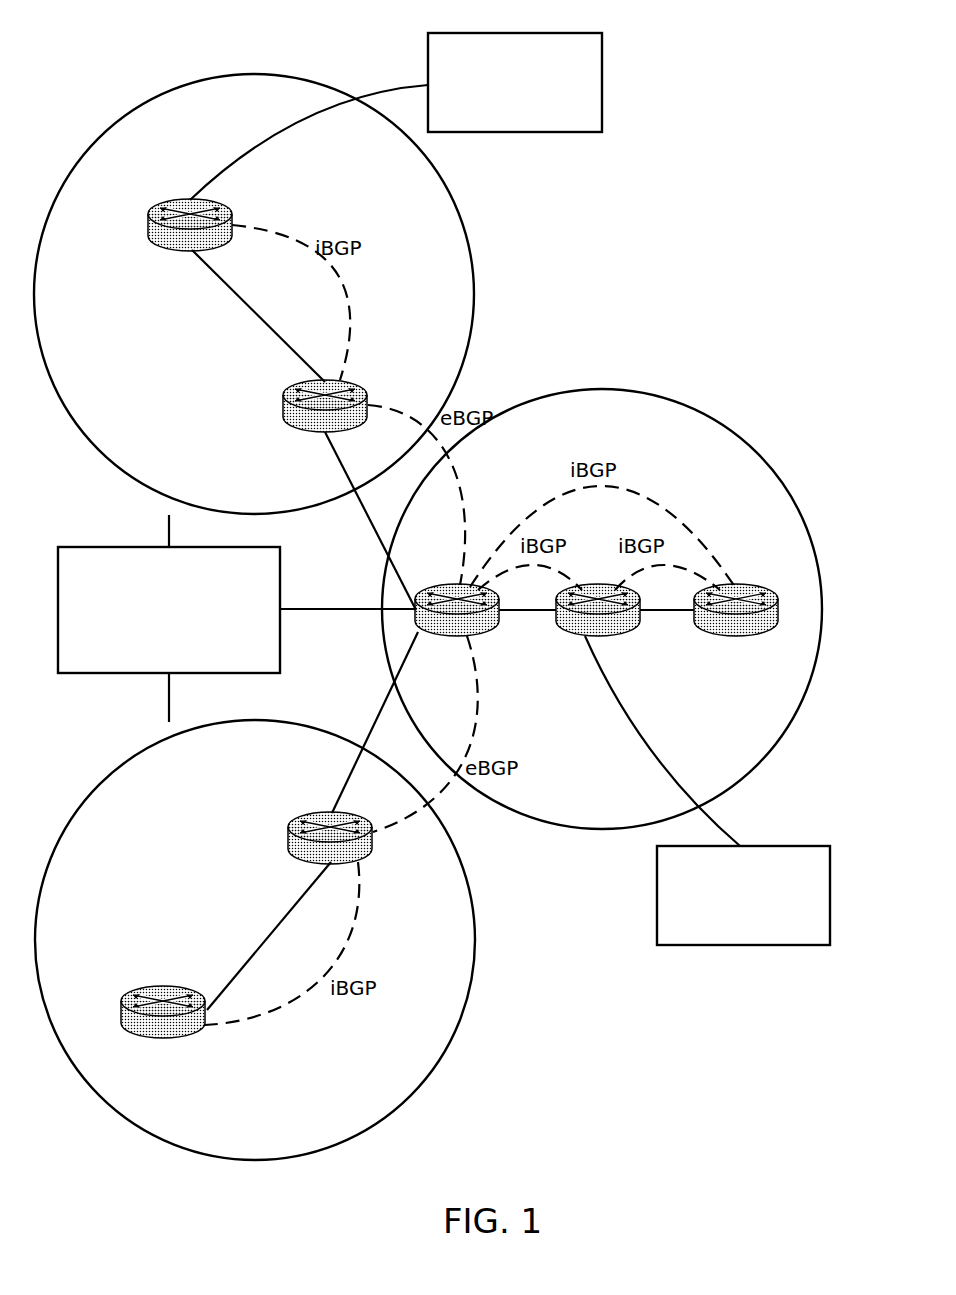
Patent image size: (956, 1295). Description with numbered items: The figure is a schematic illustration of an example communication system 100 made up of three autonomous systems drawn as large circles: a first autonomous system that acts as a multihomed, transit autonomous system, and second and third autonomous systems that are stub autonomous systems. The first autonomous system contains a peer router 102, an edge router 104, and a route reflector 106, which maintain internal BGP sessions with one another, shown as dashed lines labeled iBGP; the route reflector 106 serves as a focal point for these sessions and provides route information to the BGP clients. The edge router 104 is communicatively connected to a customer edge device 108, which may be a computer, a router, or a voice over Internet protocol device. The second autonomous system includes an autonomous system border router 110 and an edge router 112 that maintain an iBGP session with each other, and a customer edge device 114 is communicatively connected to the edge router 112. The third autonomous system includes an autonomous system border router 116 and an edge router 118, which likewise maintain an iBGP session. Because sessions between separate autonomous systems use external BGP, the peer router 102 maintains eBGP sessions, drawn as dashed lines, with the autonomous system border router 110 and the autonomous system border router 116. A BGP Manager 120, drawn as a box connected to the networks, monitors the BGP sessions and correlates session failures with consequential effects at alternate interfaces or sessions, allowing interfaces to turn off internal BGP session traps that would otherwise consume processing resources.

The communication system 100 is at (224, 54).
The peer router 102 is at (480, 630).
The edge router 104 is at (600, 636).
The route reflector 106 is at (738, 636).
The customer edge device 108 is at (743, 945).
The autonomous system border router 110 is at (283, 410).
The edge router 112 is at (150, 232).
The customer edge device 114 is at (515, 132).
The autonomous system border router 116 is at (290, 847).
The edge router 118 is at (163, 1037).
The BGP Manager 120 is at (236, 618).